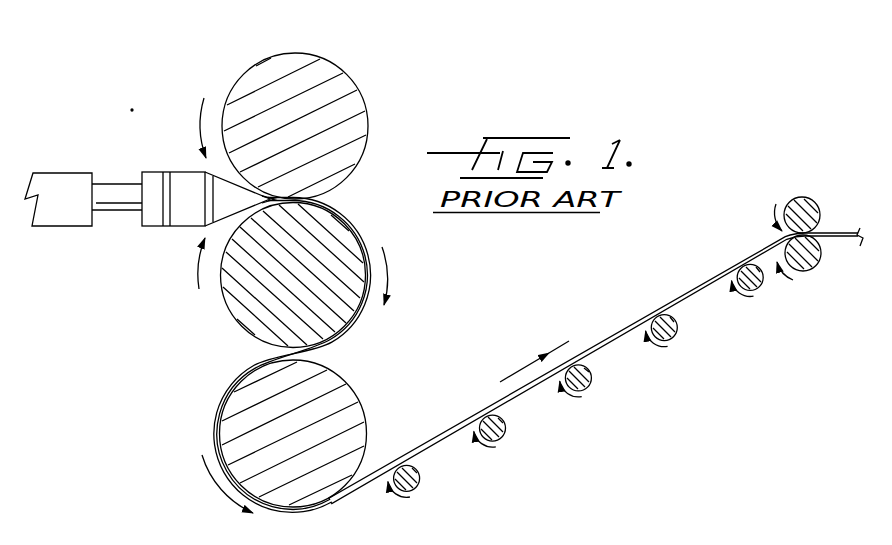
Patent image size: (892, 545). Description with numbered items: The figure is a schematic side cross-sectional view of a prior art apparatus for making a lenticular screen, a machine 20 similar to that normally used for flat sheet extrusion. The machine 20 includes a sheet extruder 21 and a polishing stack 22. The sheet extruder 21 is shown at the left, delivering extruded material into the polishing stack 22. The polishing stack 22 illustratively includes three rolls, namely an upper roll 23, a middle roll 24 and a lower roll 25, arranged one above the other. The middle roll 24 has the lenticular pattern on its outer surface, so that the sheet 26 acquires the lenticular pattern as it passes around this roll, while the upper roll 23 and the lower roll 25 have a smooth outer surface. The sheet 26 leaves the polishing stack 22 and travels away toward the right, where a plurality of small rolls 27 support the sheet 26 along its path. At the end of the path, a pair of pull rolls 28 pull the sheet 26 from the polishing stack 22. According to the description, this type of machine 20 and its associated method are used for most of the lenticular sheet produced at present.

The machine 20 is at (447, 72).
The sheet extruder 21 is at (168, 228).
The polishing stack 22 is at (405, 247).
The upper roll 23 is at (340, 72).
The middle roll 24 is at (233, 313).
The lower roll 25 is at (366, 404).
The sheet 26 is at (603, 346).
The small rolls 27 is at (420, 480).
The pull rolls 28 is at (814, 201).